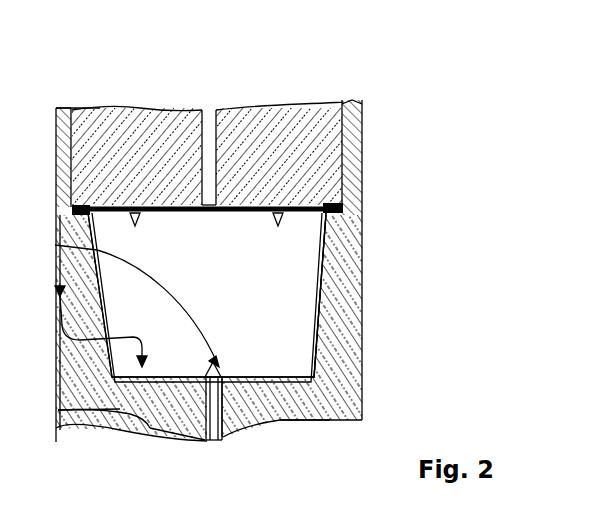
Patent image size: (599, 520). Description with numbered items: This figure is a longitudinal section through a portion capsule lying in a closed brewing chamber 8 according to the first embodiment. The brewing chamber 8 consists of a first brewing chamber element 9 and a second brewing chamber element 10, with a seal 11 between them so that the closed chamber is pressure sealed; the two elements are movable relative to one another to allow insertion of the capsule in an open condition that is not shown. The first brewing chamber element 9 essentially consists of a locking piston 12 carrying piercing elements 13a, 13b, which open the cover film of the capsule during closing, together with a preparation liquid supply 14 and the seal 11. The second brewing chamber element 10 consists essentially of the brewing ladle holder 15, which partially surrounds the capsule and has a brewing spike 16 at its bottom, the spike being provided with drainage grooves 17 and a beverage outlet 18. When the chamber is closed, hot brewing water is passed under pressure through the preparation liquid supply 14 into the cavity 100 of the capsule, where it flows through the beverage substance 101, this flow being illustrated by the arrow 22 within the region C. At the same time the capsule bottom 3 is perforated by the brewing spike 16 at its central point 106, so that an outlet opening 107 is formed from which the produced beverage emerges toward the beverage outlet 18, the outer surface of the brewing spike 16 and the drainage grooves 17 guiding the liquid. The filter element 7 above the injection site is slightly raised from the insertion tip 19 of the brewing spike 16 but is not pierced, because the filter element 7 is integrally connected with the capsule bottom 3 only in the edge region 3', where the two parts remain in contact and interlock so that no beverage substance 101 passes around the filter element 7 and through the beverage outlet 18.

The brewing chamber 8 is at (333, 76).
The first brewing chamber element 9 is at (94, 102).
The second brewing chamber element 10 is at (366, 363).
The seal 11 is at (344, 209).
The locking piston 12 is at (252, 112).
The piercing element 13a is at (141, 221).
The piercing element 13b is at (283, 218).
The preparation liquid supply 14 is at (203, 112).
The brewing ladle holder 15 is at (330, 309).
The brewing spike 16 is at (198, 412).
The drainage grooves 17 is at (240, 425).
The beverage outlet 18 is at (220, 438).
The insertion tip 19 is at (290, 418).
The flow of the fluid 22 is at (195, 326).
The cavity 100 is at (317, 357).
The beverage substance 101 is at (207, 295).
The central point 106 is at (222, 366).
The outlet opening 107 is at (236, 382).
The filter element 7 is at (137, 459).
The capsule bottom 3 is at (100, 438).
The edge region 3' is at (55, 463).
The capsule cavity C is at (215, 243).